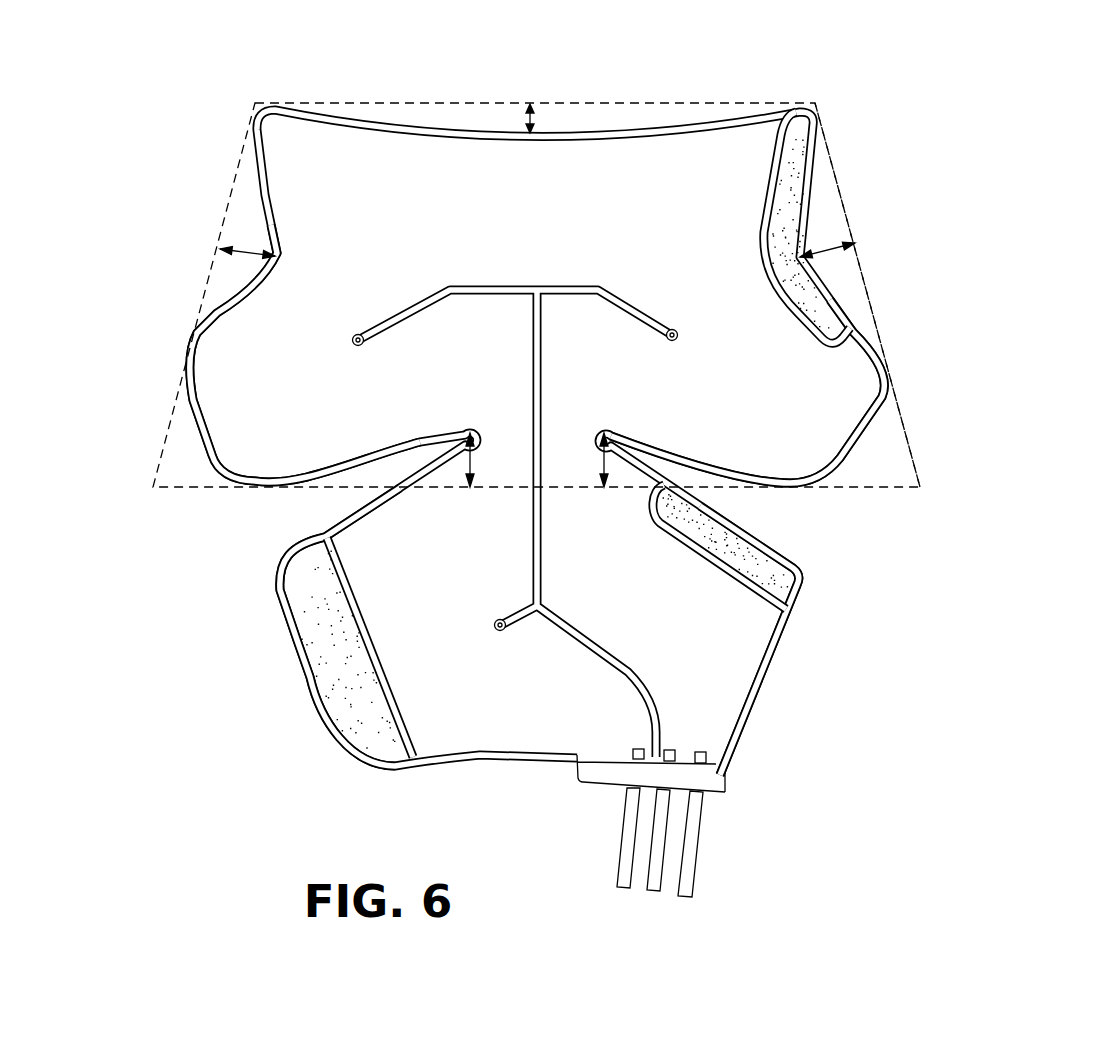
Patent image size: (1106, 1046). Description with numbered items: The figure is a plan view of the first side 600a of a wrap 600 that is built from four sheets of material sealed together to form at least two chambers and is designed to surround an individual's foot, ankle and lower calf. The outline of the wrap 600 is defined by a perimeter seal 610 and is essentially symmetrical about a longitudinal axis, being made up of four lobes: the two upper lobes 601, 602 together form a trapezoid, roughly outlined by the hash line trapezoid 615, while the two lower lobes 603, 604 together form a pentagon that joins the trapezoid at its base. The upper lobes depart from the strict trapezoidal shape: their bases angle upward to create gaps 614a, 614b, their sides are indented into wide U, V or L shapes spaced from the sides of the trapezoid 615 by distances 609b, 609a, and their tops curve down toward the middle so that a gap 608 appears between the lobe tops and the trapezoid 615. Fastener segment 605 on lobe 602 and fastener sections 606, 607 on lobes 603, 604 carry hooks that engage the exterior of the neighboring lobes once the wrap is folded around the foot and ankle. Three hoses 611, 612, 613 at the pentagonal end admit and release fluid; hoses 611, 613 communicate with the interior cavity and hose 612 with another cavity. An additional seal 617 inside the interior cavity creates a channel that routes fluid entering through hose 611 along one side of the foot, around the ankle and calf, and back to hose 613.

The wrap 600 is at (912, 170).
The first side 600a is at (883, 227).
The lobe 601 is at (210, 420).
The lobe 602 is at (858, 433).
The lobe 603 is at (783, 640).
The lobe 604 is at (300, 643).
The fastener segment 605 is at (803, 128).
The fastener section 606 is at (770, 570).
The fastening section 607 is at (346, 686).
The gap 608 is at (540, 120).
The distance 609a is at (830, 253).
The distance 609b is at (247, 253).
The perimeter seal 610 is at (710, 782).
The hose 611 is at (617, 863).
The hose 612 is at (660, 880).
The hose 613 is at (693, 873).
The gap 614a is at (610, 455).
The gap 614b is at (470, 457).
The trapezoid 615 is at (900, 400).
The additional seal 617 is at (538, 290).